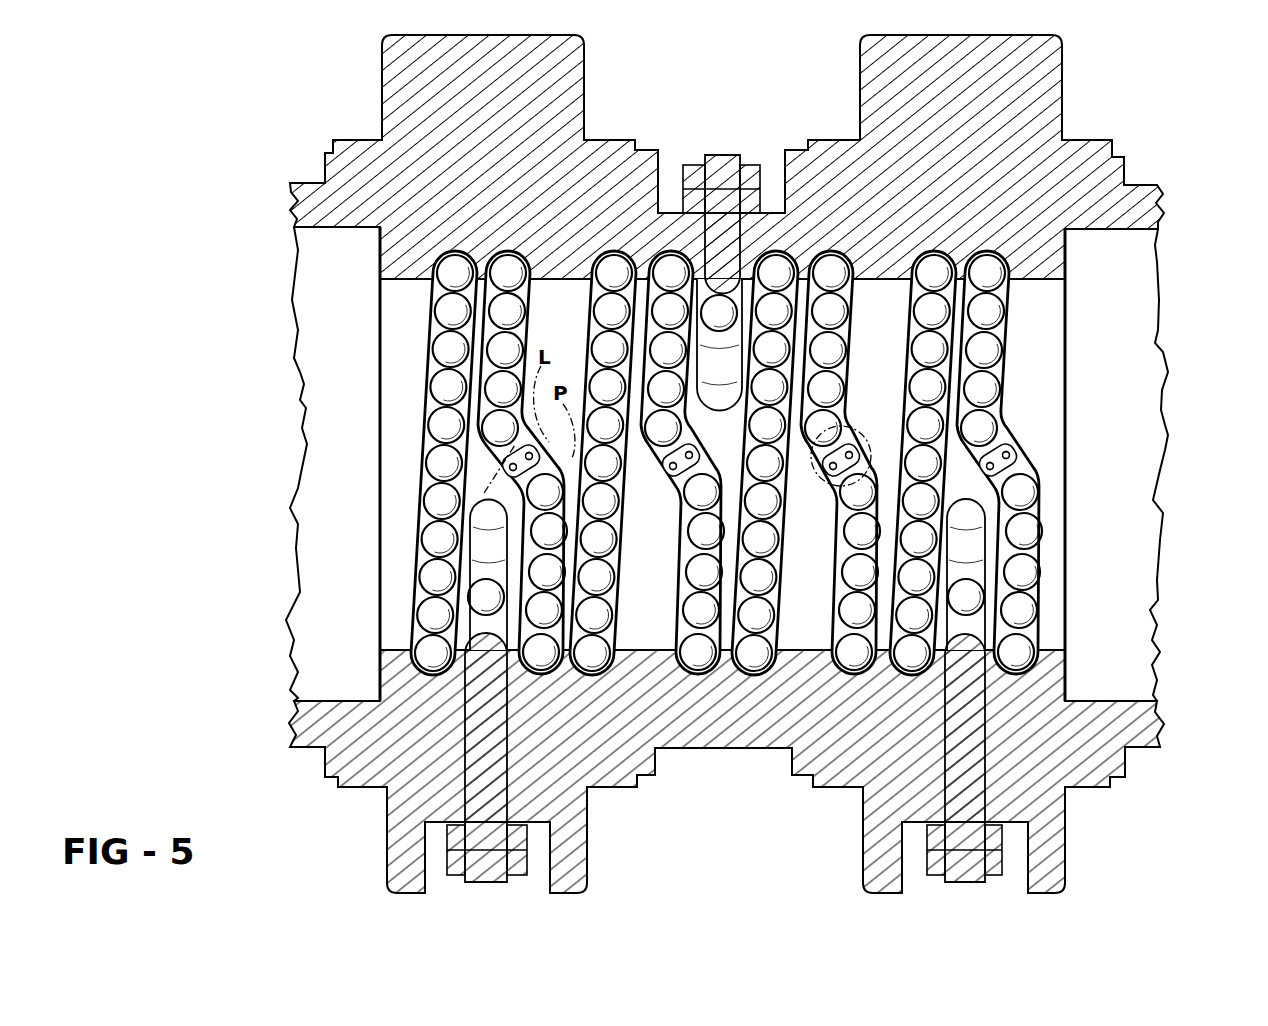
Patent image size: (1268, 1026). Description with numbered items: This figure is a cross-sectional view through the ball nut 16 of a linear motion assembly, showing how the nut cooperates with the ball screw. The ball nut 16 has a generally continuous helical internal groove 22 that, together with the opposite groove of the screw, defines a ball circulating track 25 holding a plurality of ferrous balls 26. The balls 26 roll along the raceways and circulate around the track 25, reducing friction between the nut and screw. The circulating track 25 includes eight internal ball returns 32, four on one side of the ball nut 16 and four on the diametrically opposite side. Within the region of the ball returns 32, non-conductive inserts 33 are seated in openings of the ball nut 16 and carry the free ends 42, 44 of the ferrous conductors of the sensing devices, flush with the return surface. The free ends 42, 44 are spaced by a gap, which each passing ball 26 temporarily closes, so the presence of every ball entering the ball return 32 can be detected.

The ball nut 16 is at (1090, 140).
The helical internal groove 22 is at (613, 267).
The ball circulating track 25 is at (1122, 290).
The balls 26 is at (455, 348).
The ball returns 32 is at (835, 455).
The inserts 33 is at (500, 516).
The free end 42 is at (853, 455).
The free end 44 is at (846, 452).